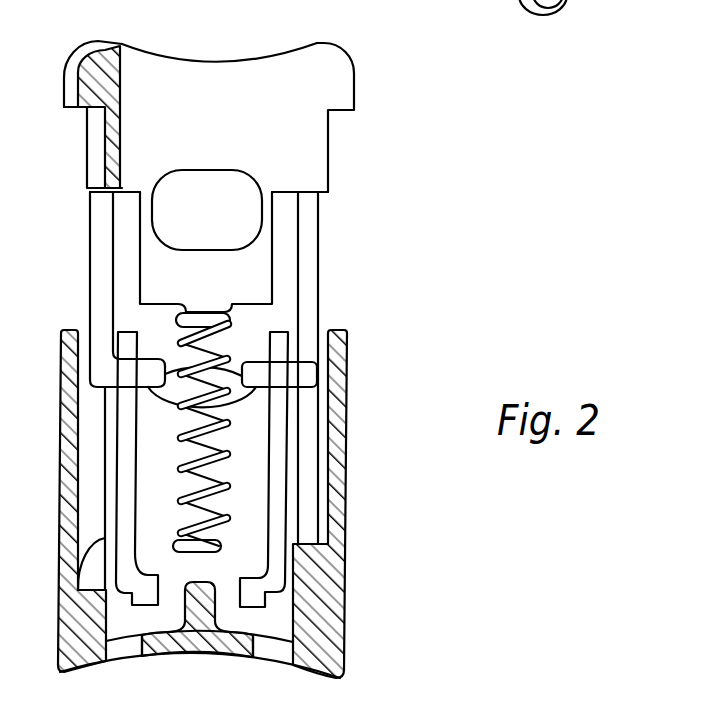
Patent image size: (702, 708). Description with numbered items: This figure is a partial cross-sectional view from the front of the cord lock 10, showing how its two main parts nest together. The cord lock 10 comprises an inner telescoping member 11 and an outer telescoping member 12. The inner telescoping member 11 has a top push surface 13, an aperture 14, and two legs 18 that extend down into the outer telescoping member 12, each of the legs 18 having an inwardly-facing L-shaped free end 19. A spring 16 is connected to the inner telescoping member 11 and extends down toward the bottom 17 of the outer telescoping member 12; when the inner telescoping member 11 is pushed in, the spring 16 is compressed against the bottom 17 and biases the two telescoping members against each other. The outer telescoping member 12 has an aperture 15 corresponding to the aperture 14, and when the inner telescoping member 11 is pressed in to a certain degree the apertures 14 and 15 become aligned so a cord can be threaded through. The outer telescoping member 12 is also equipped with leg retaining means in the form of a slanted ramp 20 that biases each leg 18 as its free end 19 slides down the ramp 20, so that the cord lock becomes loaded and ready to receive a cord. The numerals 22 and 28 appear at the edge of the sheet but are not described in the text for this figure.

The cord lock 10 is at (374, 639).
The inner telescoping member 11 is at (328, 172).
The outer telescoping member 12 is at (335, 598).
The top push surface 13 is at (217, 77).
The aperture 14 is at (223, 229).
The aperture 15 is at (258, 414).
The spring 16 is at (223, 467).
The bottom 17 is at (192, 604).
The legs 18 is at (310, 297).
The L-shaped free end 19 is at (262, 376).
The slanted ramp 20 is at (277, 524).
The tip 22 is at (612, 4).
The channel 28 is at (578, 0).